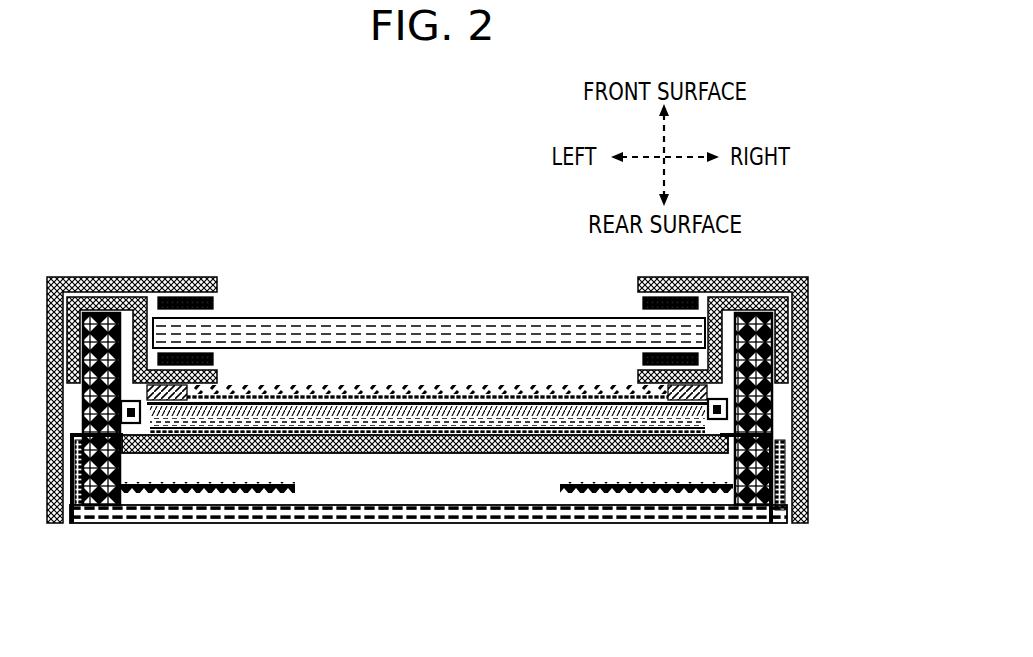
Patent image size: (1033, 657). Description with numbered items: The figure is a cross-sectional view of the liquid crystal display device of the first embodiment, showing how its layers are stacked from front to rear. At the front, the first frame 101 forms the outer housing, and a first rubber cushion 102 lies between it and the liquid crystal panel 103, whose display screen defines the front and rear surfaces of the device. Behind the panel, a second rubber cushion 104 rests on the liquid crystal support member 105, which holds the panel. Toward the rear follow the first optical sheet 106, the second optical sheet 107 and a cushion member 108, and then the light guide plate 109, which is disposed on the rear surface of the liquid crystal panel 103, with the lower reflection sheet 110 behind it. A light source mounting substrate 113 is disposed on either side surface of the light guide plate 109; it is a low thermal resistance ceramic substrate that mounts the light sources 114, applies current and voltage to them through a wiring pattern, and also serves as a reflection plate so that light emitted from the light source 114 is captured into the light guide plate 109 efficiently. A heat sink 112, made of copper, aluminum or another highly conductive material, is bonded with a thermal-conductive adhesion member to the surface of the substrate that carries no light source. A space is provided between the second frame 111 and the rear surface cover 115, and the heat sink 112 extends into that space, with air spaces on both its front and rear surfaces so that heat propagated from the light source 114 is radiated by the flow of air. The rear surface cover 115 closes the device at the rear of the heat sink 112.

The first frame 101 is at (92, 278).
The first rubber cushion 102 is at (217, 295).
The liquid crystal panel 103 is at (430, 332).
The second rubber cushion 104 is at (662, 355).
The liquid crystal support member 105 is at (222, 388).
The first optical sheet 106 is at (235, 390).
The second optical sheet 107 is at (565, 405).
The cushion member 108 is at (160, 403).
The light guide plate 109 is at (500, 418).
The lower reflection sheet 110 is at (332, 430).
The second frame 111 is at (692, 450).
The heat sink 112 is at (192, 493).
The light source mounting substrate 113 is at (730, 396).
The light source 114 is at (637, 389).
The rear surface cover 115 is at (426, 523).